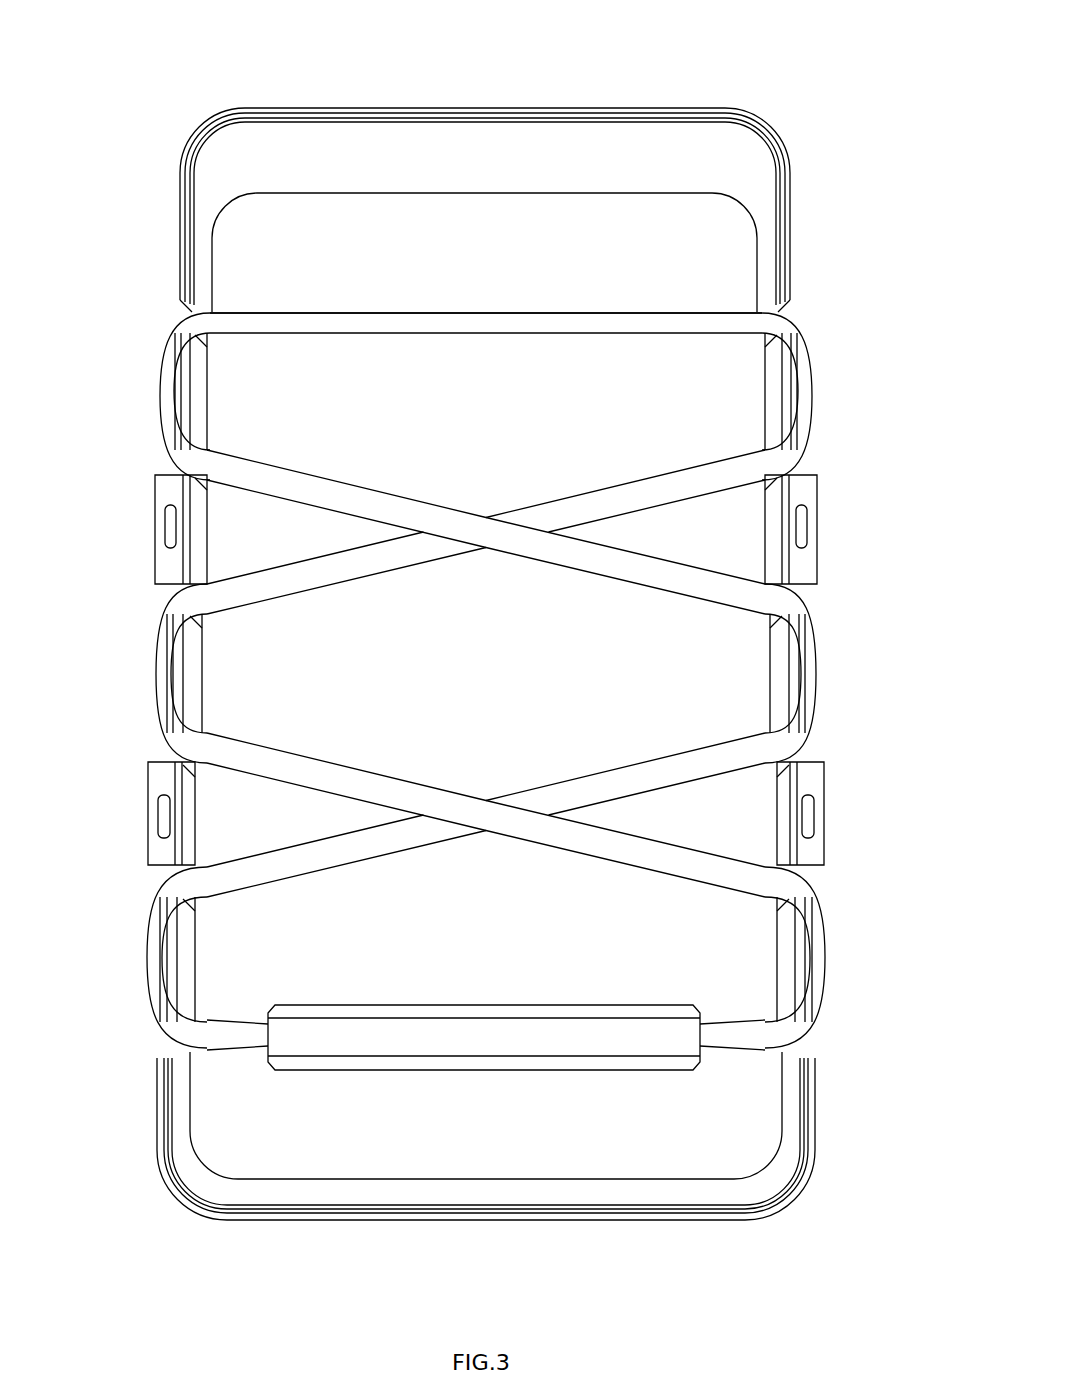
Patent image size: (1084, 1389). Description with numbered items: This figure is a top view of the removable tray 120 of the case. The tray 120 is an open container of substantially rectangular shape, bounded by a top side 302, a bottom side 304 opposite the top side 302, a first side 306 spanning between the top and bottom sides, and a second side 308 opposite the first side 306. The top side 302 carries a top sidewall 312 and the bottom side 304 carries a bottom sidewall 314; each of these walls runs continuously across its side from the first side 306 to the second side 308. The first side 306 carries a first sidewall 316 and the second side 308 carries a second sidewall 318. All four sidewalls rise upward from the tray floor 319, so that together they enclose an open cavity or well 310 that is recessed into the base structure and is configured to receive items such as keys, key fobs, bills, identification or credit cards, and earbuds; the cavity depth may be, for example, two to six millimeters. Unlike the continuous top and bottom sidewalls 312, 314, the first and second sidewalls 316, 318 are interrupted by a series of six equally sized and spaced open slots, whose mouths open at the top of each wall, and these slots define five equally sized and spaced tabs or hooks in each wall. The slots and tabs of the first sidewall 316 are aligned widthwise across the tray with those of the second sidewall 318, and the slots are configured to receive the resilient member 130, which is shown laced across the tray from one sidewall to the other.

The tray 120 is at (822, 70).
The top side 302 is at (528, 88).
The bottom side 304 is at (433, 1232).
The first side 306 is at (118, 766).
The second side 308 is at (872, 773).
The tray cavity 310 is at (240, 158).
The top sidewall 312 is at (315, 148).
The bottom sidewall 314 is at (640, 1195).
The first sidewall 316 is at (175, 1112).
The second sidewall 318 is at (800, 1105).
The tray floor 319 is at (503, 689).
The resilient member 130 is at (668, 312).